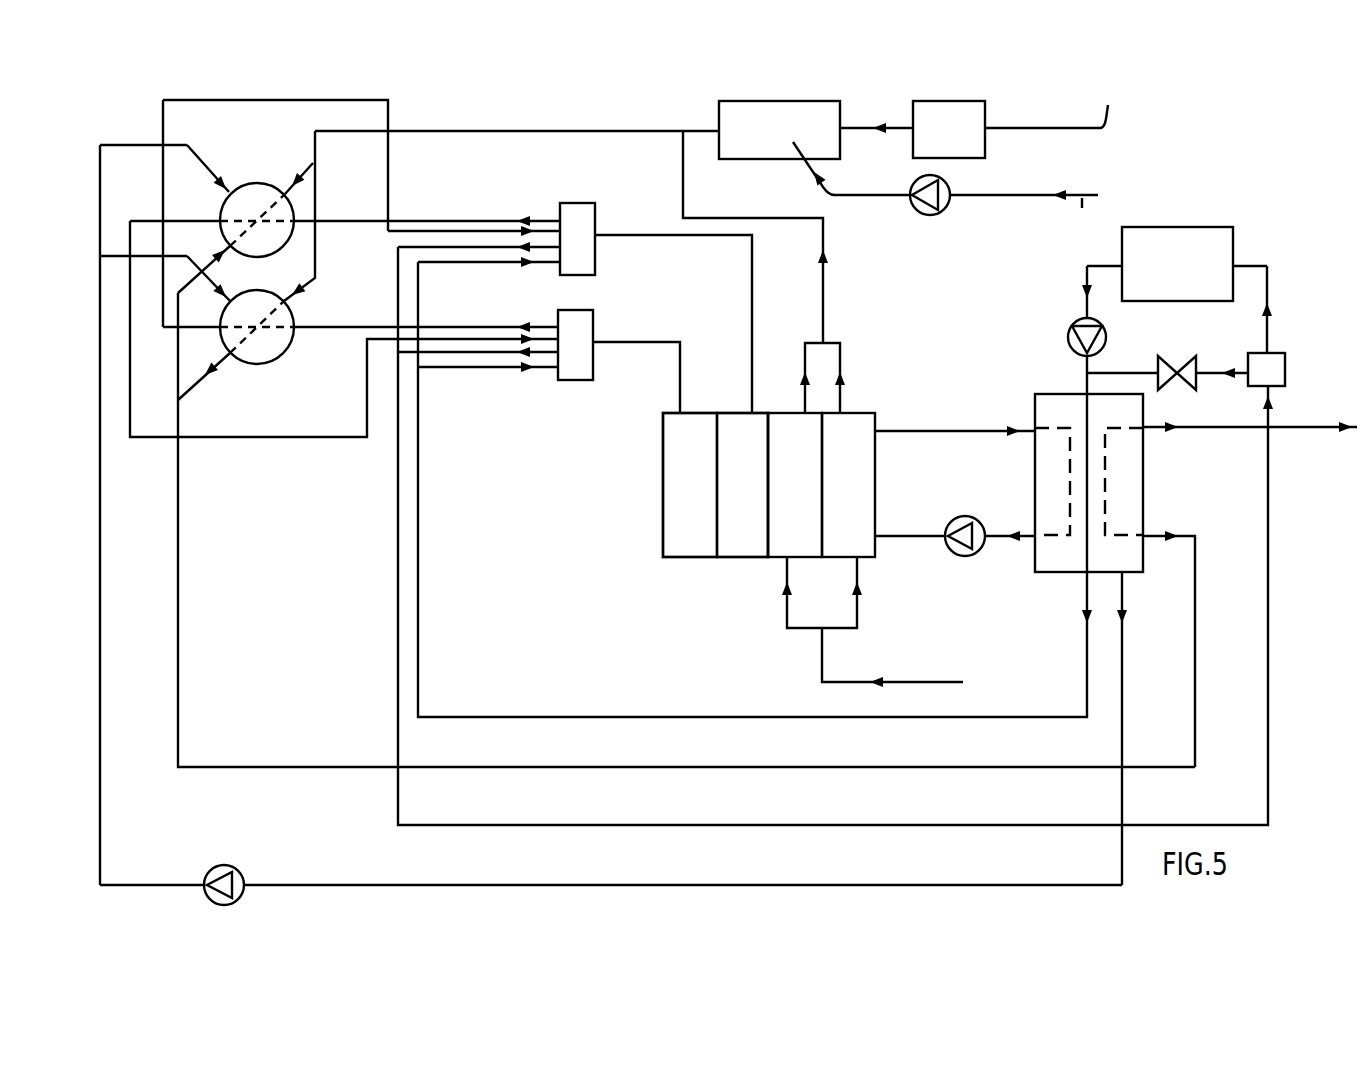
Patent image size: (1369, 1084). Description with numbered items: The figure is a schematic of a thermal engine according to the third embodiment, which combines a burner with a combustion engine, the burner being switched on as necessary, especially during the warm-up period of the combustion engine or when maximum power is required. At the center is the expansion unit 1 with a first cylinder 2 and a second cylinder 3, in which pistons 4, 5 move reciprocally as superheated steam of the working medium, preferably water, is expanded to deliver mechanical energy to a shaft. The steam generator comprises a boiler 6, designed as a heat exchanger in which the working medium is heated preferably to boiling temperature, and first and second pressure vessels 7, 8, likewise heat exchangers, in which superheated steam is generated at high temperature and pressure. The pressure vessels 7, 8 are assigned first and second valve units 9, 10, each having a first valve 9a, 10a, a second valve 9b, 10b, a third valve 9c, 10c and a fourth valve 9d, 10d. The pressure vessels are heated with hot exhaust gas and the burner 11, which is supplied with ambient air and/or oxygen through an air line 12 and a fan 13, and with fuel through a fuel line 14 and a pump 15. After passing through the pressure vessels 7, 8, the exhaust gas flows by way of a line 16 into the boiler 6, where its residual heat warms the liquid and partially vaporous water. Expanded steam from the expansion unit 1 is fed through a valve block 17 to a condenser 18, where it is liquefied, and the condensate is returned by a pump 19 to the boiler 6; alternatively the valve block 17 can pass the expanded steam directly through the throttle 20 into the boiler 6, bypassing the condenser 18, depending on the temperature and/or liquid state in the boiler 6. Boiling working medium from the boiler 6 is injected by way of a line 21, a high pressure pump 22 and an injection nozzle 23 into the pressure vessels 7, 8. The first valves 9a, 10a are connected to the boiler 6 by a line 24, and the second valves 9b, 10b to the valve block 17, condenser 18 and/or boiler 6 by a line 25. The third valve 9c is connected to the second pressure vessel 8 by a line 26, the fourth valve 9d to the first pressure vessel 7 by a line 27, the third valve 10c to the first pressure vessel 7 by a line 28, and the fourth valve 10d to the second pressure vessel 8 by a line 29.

The expansion unit 1 is at (763, 563).
The first cylinder 2 is at (680, 473).
The second cylinder 3 is at (733, 513).
The piston 4 is at (808, 448).
The piston 5 is at (852, 442).
The boiler 6 is at (1050, 565).
The first pressure vessel 7 is at (277, 348).
The second pressure vessel 8 is at (272, 238).
The first valve unit 9 is at (587, 322).
The first valve 9a is at (527, 368).
The second valve 9b is at (535, 353).
The third valve 9c is at (520, 325).
The fourth valve 9d is at (530, 337).
The second valve unit 10 is at (583, 220).
The first valve 10a is at (520, 262).
The second valve 10b is at (520, 247).
The third valve 10c is at (517, 220).
The fourth valve 10d is at (518, 231).
The burner 11 is at (833, 118).
The air line 12 is at (1058, 105).
The fan 13 is at (968, 118).
The fuel line 14 is at (1082, 219).
The pump 15 is at (930, 213).
The line 16 is at (182, 500).
The valve block 17 is at (1268, 362).
The condenser 18 is at (1223, 242).
The pump 19 is at (1098, 349).
The throttle 20 is at (1177, 362).
The line 21 is at (522, 885).
The high pressure pump 22 is at (239, 877).
The injection nozzle 23 is at (208, 278).
The line 24 is at (433, 368).
The line 25 is at (453, 353).
The line 26 is at (433, 327).
The line 27 is at (450, 339).
The line 28 is at (413, 230).
The line 29 is at (403, 210).